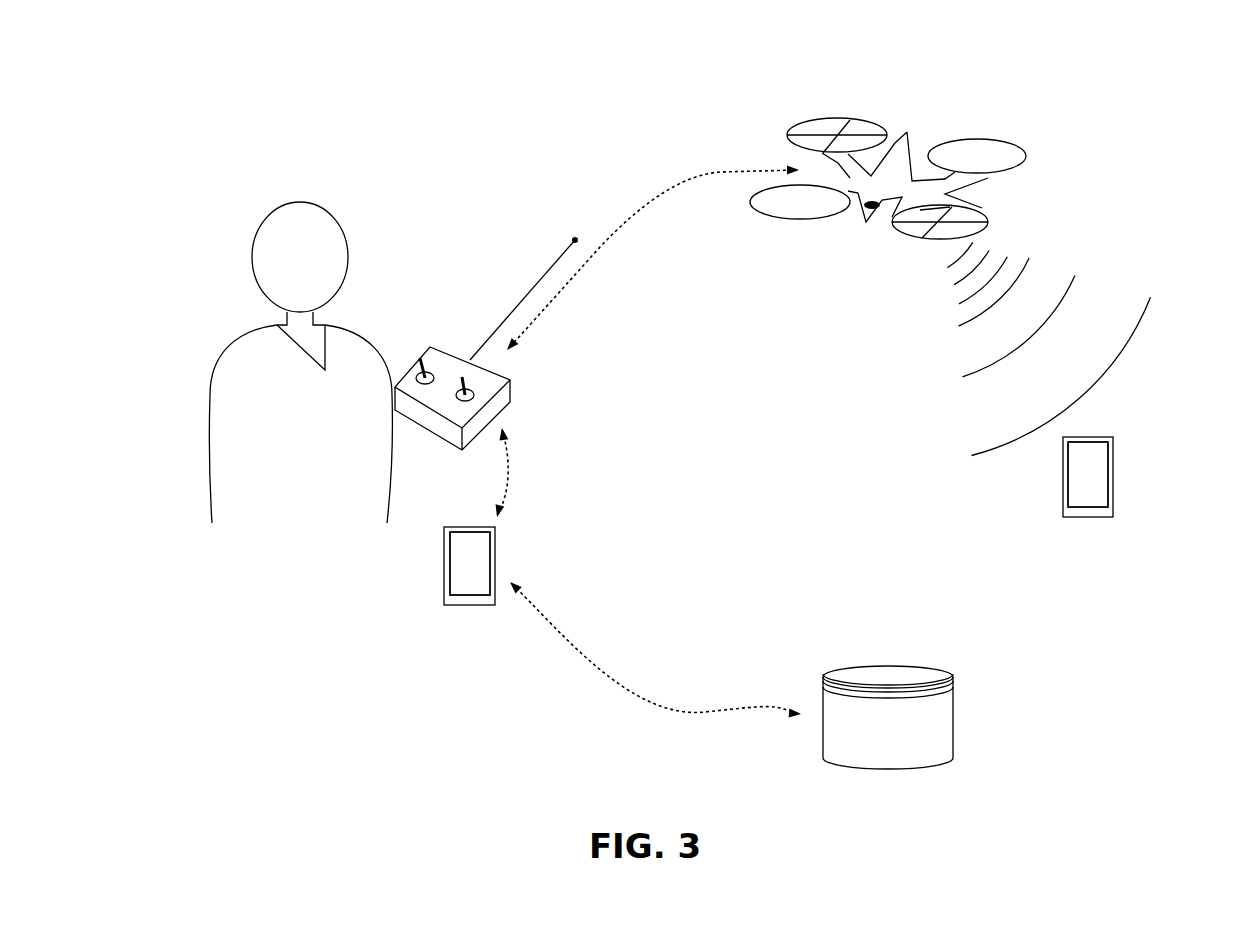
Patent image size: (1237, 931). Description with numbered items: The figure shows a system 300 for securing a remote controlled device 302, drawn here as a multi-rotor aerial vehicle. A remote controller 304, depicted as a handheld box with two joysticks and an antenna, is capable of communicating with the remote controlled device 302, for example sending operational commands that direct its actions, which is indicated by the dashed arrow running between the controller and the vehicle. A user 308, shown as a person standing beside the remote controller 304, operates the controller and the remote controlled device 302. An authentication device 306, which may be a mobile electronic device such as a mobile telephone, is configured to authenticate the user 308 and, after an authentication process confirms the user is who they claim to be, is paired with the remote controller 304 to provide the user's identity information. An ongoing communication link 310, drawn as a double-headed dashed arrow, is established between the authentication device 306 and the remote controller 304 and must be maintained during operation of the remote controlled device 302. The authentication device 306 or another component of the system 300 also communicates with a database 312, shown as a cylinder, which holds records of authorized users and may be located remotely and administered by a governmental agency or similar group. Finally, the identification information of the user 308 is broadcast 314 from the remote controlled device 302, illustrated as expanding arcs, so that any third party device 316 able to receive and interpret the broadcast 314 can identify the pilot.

The system 300 is at (481, 68).
The remote controlled device 302 is at (985, 188).
The remote controller 304 is at (505, 398).
The authentication device 306 is at (443, 578).
The user 308 is at (281, 449).
The communication link 310 is at (503, 475).
The database 312 is at (869, 745).
The broadcast 314 is at (984, 348).
The third party device 316 is at (1115, 488).